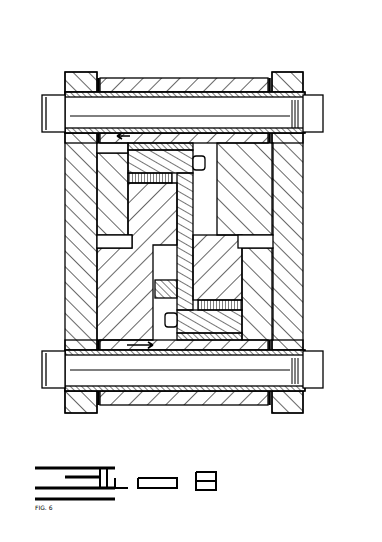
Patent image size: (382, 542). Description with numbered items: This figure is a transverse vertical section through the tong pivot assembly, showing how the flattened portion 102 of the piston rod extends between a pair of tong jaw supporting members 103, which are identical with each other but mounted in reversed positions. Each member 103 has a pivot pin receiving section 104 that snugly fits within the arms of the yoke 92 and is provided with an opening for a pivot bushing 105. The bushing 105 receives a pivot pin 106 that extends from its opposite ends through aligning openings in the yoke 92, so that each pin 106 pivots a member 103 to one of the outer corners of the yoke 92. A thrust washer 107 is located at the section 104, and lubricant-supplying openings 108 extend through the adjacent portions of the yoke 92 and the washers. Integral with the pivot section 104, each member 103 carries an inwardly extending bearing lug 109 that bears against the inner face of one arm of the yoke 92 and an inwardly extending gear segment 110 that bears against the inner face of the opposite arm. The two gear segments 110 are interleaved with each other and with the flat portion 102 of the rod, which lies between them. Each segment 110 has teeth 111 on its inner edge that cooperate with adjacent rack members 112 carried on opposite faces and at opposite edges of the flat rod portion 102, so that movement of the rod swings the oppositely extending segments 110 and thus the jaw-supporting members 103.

The yoke 92 is at (192, 244).
The flattened portion of the piston rod 102 is at (193, 193).
The tong jaw supporting member 103 is at (177, 229).
The pivot pin receiving section 104 is at (152, 78).
The pivot bushing 105 is at (140, 92).
The pivot pin 106 is at (230, 100).
The thrust washer 107 is at (100, 83).
The lubricant-supplying opening 108 is at (72, 82).
The bearing lug 109 is at (103, 202).
The gear segment 110 is at (112, 290).
The teeth 111 is at (63, 162).
The rack member 112 is at (170, 150).